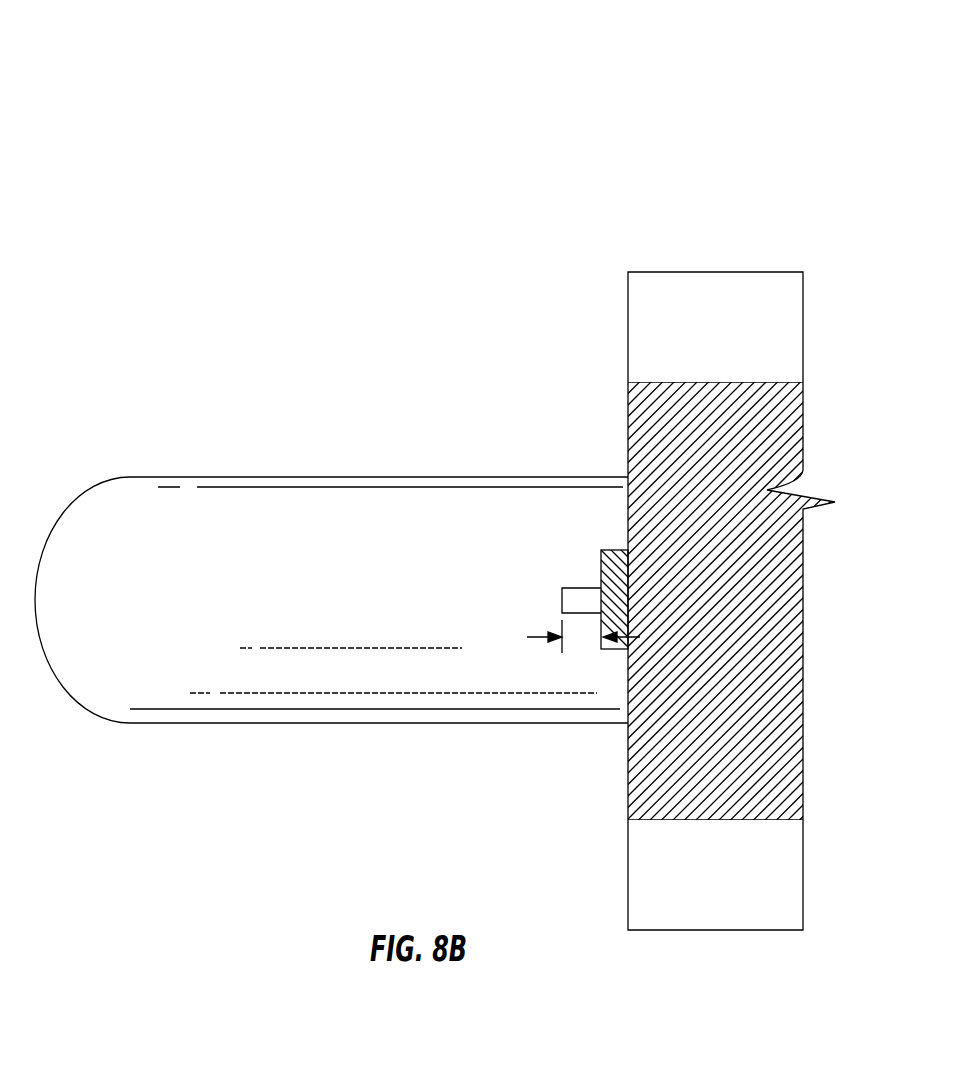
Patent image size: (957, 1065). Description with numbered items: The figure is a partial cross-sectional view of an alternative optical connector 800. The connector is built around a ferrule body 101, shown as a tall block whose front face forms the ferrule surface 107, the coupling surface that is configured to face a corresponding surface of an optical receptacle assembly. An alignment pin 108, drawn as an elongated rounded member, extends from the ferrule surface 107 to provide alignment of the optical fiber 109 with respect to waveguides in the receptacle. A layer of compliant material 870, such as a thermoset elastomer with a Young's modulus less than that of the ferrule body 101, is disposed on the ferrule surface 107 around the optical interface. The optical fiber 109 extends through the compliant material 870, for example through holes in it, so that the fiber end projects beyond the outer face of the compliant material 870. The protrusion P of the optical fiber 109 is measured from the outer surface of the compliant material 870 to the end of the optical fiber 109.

The optical connector 800 is at (765, 158).
The ferrule body 101 is at (718, 272).
The ferrule surface 107 is at (628, 432).
The alignment pin 108 is at (183, 498).
The compliant material 870 is at (598, 568).
The optical fiber 109 is at (562, 600).
The protrusion P is at (542, 637).